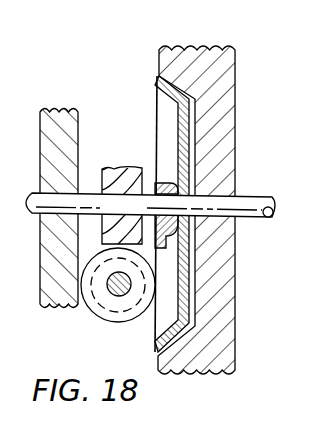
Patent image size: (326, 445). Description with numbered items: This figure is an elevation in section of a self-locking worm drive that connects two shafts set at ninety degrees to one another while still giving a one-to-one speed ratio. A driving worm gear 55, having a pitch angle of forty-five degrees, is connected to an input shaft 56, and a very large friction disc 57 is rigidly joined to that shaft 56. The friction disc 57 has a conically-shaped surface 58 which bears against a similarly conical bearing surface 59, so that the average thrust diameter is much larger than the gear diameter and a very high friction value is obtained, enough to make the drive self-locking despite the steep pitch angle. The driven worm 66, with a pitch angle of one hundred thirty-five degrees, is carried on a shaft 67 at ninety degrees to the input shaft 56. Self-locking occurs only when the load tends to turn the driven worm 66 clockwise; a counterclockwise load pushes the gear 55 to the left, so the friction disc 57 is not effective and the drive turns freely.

The gear 55 is at (122, 168).
The shaft 56 is at (260, 199).
The friction disc 57 is at (183, 118).
The conically-shaped surface 58 is at (157, 78).
The bearing surface 59 is at (204, 65).
The driven worm 66 is at (97, 315).
The shaft 67 is at (127, 294).